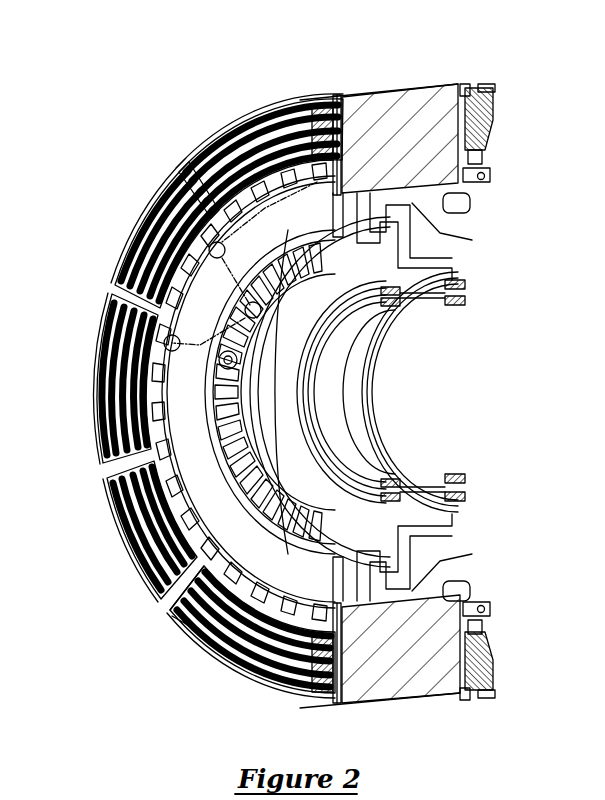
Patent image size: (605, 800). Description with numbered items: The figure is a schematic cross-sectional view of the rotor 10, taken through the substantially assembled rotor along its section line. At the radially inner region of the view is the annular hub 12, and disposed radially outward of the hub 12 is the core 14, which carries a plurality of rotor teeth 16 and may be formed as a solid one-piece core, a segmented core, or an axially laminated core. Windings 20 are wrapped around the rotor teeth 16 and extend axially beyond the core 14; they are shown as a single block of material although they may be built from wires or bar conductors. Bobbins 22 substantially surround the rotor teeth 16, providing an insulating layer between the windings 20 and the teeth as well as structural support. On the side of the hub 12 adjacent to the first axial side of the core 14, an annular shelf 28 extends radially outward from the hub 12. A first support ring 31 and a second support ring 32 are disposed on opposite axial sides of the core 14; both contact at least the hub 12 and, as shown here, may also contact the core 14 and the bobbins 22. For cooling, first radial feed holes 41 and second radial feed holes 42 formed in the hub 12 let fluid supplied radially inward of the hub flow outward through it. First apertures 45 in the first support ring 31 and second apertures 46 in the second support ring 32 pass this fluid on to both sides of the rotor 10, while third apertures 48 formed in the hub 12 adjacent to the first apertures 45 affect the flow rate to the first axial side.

The rotor 10 is at (70, 120).
The hub 12 is at (462, 274).
The core 14 is at (386, 176).
The rotor teeth 16 is at (390, 105).
The windings 20 is at (135, 245).
The bobbins 22 is at (300, 105).
The annular shelf 28 is at (320, 580).
The first support ring 31 is at (335, 97).
The second support ring 32 is at (466, 83).
The first radial feed holes 41 is at (386, 233).
The second radial feed holes 42 is at (450, 203).
The first apertures 45 is at (401, 393).
The second apertures 46 is at (483, 155).
The third apertures 48 is at (215, 640).